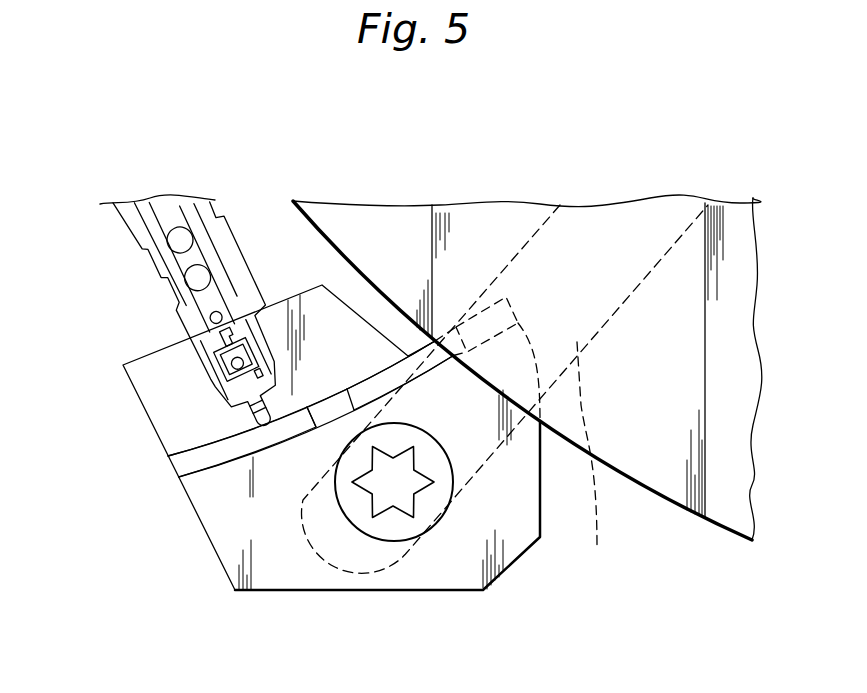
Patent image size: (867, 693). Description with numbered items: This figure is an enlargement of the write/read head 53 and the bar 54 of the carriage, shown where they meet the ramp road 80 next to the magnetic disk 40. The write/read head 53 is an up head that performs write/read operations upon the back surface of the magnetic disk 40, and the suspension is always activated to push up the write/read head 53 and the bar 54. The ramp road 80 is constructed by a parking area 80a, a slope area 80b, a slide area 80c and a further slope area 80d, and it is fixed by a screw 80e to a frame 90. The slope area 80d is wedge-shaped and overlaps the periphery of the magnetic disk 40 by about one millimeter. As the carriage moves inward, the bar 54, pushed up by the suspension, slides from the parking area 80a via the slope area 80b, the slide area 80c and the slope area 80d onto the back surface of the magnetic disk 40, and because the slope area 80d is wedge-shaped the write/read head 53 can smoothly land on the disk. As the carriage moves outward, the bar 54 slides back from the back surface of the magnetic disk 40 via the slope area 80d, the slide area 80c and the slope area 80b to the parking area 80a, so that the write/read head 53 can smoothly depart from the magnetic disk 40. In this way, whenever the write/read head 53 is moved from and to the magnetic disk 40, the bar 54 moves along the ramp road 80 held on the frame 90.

The magnetic disk 40 is at (673, 482).
The write/read head 53 is at (205, 358).
The bar 54 is at (167, 453).
The ramp road 80 is at (270, 560).
The parking area 80a is at (242, 442).
The slope area 80b is at (330, 408).
The slide area 80c is at (400, 375).
The slope area 80d is at (487, 359).
The screw 80e is at (388, 487).
The frame 90 is at (592, 463).